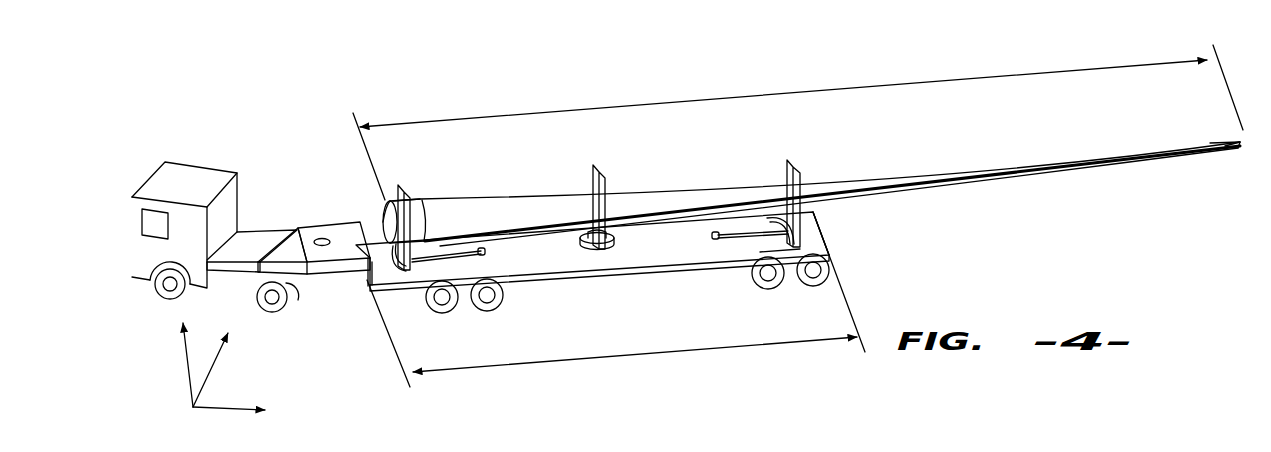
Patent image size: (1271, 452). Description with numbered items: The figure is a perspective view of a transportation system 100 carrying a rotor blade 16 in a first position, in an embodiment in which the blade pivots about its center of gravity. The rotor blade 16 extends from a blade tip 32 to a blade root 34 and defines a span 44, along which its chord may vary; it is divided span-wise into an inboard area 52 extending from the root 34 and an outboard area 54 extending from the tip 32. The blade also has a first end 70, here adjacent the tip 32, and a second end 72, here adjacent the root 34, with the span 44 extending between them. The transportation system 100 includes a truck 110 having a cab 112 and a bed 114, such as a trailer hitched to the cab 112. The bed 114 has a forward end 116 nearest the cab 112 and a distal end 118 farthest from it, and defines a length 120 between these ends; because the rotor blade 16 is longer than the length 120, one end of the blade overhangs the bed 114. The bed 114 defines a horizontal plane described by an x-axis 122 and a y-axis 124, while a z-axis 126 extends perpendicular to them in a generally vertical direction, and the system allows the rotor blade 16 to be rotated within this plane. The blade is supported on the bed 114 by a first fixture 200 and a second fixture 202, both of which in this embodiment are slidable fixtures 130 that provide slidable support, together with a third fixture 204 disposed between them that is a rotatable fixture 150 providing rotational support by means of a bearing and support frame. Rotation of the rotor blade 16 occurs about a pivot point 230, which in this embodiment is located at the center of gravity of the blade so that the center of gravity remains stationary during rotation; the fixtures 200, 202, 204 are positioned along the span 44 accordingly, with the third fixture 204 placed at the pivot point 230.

The rotor blade 16 is at (998, 147).
The blade tip 32 is at (1223, 127).
The blade root 34 is at (421, 191).
The span 44 is at (633, 105).
The inboard area 52 is at (653, 203).
The outboard area 54 is at (877, 173).
The first end 70 is at (1243, 142).
The second end 72 is at (378, 222).
The transportation system 100 is at (300, 122).
The truck 110 is at (190, 150).
The cab 112 is at (203, 173).
The bed 114 is at (665, 247).
The forward end 116 is at (376, 274).
The distal end 118 is at (823, 223).
The length 120 is at (613, 360).
The x-axis 122 is at (227, 410).
The y-axis 124 is at (210, 378).
The z-axis 126 is at (187, 378).
The slidable fixture 130 is at (428, 264).
The rotatable fixture 150 is at (584, 256).
The first fixture 200 is at (765, 223).
The second fixture 202 is at (468, 261).
The third fixture 204 is at (568, 245).
The pivot point 230 is at (586, 199).